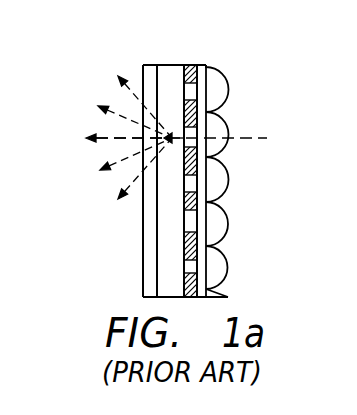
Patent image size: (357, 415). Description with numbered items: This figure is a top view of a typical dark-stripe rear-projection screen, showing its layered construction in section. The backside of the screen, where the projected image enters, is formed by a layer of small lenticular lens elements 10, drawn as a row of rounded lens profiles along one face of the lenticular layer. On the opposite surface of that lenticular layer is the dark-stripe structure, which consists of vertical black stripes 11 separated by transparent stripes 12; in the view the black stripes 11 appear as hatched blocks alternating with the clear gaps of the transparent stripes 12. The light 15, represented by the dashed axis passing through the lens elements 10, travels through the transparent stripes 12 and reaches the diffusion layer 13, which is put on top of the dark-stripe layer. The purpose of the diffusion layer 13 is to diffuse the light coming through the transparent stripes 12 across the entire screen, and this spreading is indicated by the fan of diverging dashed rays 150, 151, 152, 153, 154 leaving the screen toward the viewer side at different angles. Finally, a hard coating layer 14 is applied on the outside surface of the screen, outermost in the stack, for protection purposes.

The lenticular lens elements 10 is at (229, 94).
The black stripes 11 is at (187, 64).
The transparent stripes 12 is at (203, 270).
The diffusion layer 13 is at (170, 64).
The hard coating layer 14 is at (150, 263).
The light 15 is at (245, 139).
The diffused light across the screen 150 is at (118, 75).
The diffused light across the screen 151 is at (100, 107).
The diffused light across the screen 152 is at (88, 138).
The diffused light across the screen 153 is at (100, 170).
The diffused light across the screen 154 is at (118, 198).